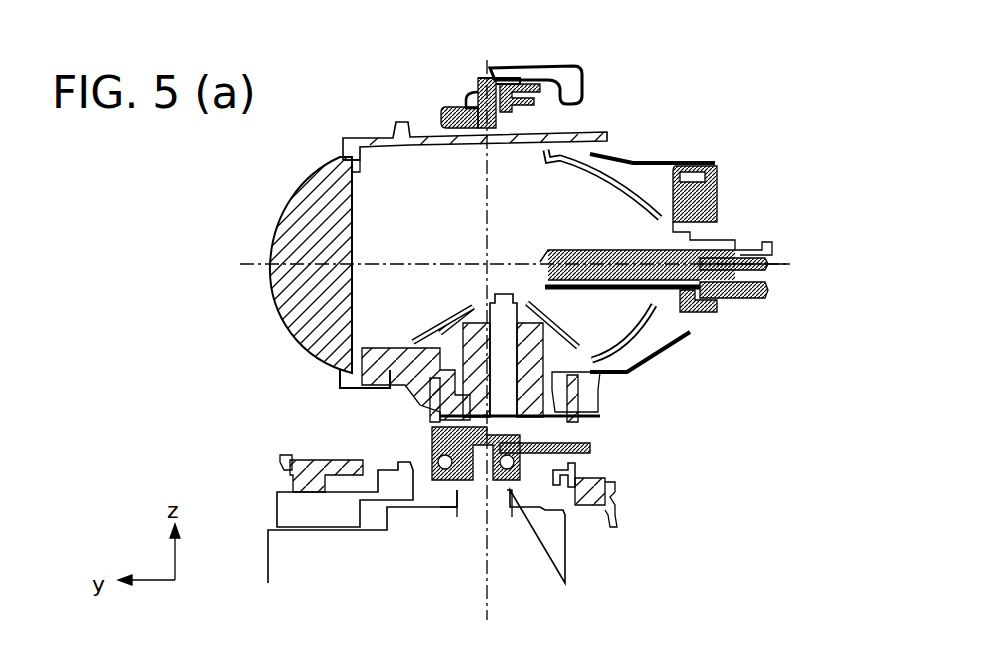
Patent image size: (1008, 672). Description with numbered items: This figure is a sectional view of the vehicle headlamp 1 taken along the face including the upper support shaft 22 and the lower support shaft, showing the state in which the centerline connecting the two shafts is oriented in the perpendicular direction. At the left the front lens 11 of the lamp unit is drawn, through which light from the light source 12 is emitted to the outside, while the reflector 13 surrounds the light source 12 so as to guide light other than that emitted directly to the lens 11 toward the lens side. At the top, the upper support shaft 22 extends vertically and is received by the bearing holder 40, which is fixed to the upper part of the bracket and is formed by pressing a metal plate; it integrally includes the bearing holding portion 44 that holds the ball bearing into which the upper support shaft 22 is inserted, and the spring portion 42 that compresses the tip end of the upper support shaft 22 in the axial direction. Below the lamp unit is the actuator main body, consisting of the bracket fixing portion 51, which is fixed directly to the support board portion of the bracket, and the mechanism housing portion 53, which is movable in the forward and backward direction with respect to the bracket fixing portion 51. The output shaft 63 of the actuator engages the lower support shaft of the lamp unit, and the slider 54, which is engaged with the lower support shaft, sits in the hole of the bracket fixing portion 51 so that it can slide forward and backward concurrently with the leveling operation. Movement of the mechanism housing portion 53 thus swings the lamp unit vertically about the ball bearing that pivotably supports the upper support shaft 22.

The vehicle headlamp 1 is at (760, 173).
The front lens 11 is at (303, 217).
The light source 12 is at (660, 307).
The reflector 13 is at (607, 193).
The upper support shaft 22 is at (477, 82).
The bearing holder 40 is at (555, 66).
The spring portion 42 is at (583, 87).
The bearing holding portion 44 is at (470, 98).
The bracket fixing portion 51 is at (303, 513).
The mechanism housing portion 53 is at (350, 560).
The slider 54 is at (437, 433).
The output shaft 63 is at (497, 493).